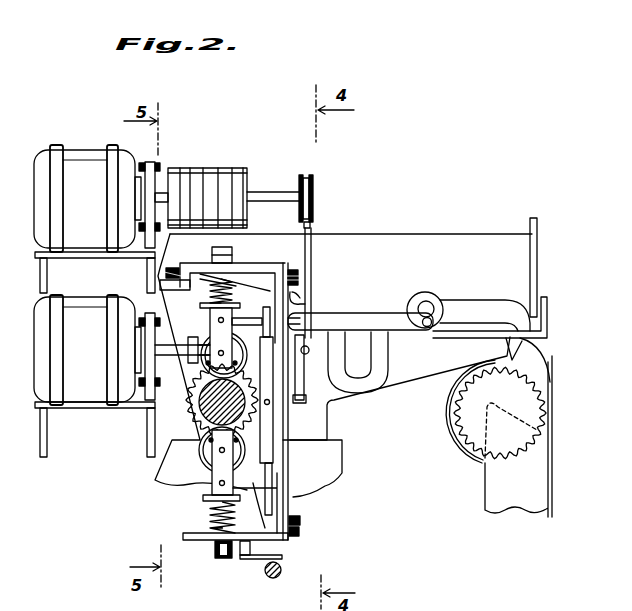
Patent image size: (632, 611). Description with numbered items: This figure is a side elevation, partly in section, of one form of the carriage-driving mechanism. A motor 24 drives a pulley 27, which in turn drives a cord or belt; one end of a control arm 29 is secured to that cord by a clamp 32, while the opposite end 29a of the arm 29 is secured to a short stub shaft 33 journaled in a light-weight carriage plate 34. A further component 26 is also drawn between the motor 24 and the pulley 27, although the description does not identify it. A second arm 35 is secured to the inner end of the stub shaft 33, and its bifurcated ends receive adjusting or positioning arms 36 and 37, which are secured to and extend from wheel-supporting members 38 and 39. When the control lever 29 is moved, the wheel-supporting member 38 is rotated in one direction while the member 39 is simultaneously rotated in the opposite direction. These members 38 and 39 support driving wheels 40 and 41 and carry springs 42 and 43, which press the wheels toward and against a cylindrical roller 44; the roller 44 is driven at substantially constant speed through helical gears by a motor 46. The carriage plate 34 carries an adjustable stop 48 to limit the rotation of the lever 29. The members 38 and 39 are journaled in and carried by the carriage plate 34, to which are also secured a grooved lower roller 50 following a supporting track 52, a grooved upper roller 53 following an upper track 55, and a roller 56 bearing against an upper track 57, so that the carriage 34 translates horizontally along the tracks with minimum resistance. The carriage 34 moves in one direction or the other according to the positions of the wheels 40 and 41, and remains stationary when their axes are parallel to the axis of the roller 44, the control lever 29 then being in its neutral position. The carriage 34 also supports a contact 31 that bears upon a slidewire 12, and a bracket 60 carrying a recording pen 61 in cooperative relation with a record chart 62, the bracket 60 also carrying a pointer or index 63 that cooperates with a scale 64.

The slidewire 12 is at (283, 568).
The motor 24 is at (95, 153).
The gear motor 26 is at (243, 168).
The pulley 27 is at (314, 200).
The control arm 29 is at (312, 268).
The opposite end of the arm 29a is at (396, 417).
The contact 31 is at (256, 560).
The clamp 32 is at (312, 225).
The stub shaft 33 is at (304, 378).
The carriage plate 34 is at (274, 480).
The second arm 35 is at (273, 447).
The adjusting arm 36 is at (247, 318).
The adjusting arm 37 is at (235, 506).
The wheel-supporting member 38 is at (196, 380).
The wheel-supporting member 39 is at (213, 486).
The driving wheel 40 is at (206, 340).
The driving wheel 41 is at (204, 453).
The spring 42 is at (206, 299).
The spring 43 is at (206, 515).
The cylindrical roller 44 is at (199, 413).
The motor 46 is at (84, 300).
The adjustable stop 48 is at (318, 338).
The lower roller 50 is at (302, 520).
The supporting track 52 is at (302, 531).
The upper roller 53 is at (304, 301).
The upper track 55 is at (292, 270).
The roller 56 is at (163, 285).
The upper track 57 is at (173, 268).
The bracket 60 is at (373, 316).
The recording pen 61 is at (466, 303).
The record chart 62 is at (549, 462).
The pointer 63 is at (549, 326).
The scale 64 is at (540, 290).